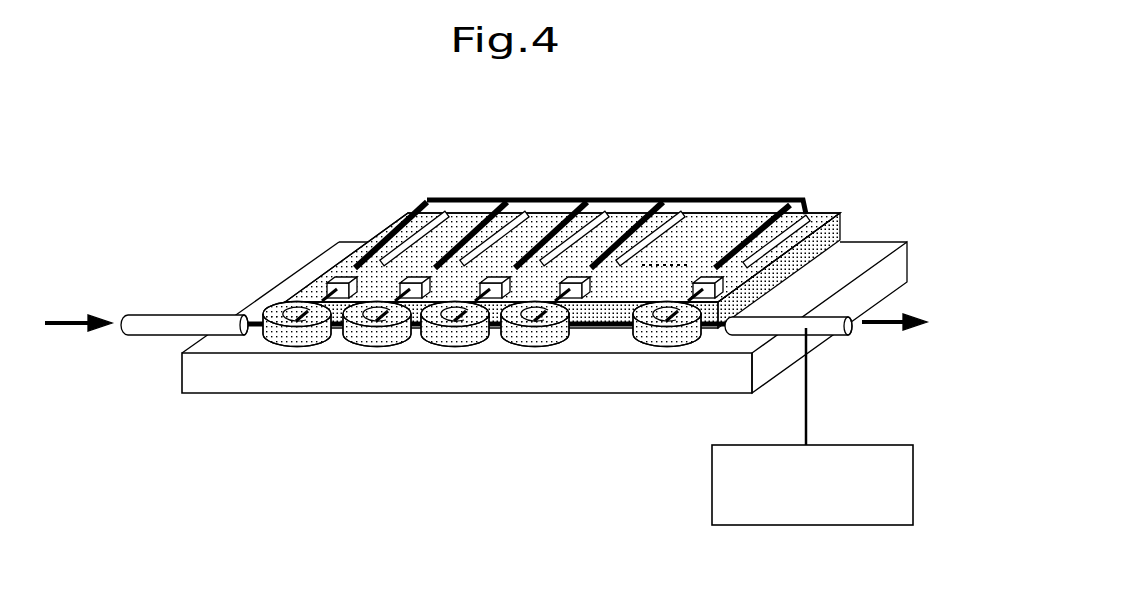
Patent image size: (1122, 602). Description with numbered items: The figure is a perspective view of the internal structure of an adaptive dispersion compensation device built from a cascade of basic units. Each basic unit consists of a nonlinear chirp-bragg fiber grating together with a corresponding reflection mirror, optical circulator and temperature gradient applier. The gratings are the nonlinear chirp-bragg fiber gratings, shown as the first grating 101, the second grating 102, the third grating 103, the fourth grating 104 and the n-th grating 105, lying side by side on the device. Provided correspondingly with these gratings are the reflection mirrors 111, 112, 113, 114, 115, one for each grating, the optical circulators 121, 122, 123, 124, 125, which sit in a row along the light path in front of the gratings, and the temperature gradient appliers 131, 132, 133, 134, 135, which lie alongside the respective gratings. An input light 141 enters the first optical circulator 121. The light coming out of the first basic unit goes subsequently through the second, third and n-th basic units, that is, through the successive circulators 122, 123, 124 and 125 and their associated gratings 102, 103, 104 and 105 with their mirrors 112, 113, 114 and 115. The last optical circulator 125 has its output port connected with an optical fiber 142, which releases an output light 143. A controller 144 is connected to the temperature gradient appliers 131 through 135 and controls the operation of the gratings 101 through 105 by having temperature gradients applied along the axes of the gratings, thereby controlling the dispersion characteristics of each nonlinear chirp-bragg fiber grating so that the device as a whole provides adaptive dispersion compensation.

The nonlinear chirp-bragg fiber grating #1 101 is at (380, 235).
The nonlinear chirp-bragg fiber grating #2 102 is at (427, 213).
The nonlinear chirp-bragg fiber grating #3 103 is at (517, 218).
The nonlinear chirp-bragg fiber grating #4 104 is at (628, 256).
The nonlinear chirp-bragg fiber grating #n 105 is at (807, 138).
The reflection mirror #1 111 is at (343, 270).
The reflection mirror #2 112 is at (428, 273).
The reflection mirror #3 113 is at (510, 272).
The reflection mirror #4 114 is at (592, 274).
The reflection mirror #n 115 is at (705, 279).
The optical circulator #1 121 is at (303, 345).
The optical circulator #2 122 is at (372, 346).
The optical circulator #3 123 is at (447, 346).
The optical circulator #4 124 is at (530, 344).
The optical circulator #n 125 is at (660, 346).
The temperature gradient applier #1 131 is at (382, 264).
The temperature gradient applier #2 132 is at (463, 264).
The temperature gradient applier #3 133 is at (540, 262).
The temperature gradient applier #4 134 is at (620, 262).
The temperature gradient applier #n 135 is at (740, 272).
The input light 141 is at (72, 338).
The optical fiber 142 is at (256, 330).
The output light 143 is at (889, 336).
The controller 144 is at (712, 503).